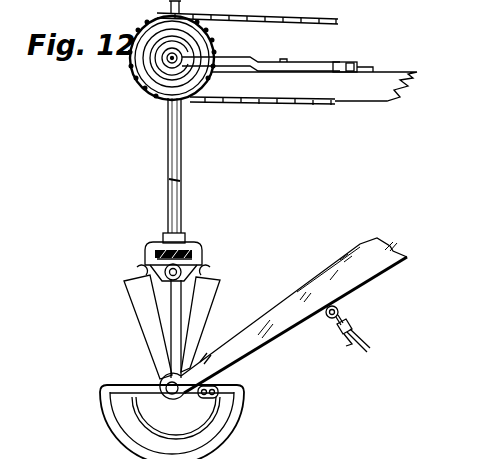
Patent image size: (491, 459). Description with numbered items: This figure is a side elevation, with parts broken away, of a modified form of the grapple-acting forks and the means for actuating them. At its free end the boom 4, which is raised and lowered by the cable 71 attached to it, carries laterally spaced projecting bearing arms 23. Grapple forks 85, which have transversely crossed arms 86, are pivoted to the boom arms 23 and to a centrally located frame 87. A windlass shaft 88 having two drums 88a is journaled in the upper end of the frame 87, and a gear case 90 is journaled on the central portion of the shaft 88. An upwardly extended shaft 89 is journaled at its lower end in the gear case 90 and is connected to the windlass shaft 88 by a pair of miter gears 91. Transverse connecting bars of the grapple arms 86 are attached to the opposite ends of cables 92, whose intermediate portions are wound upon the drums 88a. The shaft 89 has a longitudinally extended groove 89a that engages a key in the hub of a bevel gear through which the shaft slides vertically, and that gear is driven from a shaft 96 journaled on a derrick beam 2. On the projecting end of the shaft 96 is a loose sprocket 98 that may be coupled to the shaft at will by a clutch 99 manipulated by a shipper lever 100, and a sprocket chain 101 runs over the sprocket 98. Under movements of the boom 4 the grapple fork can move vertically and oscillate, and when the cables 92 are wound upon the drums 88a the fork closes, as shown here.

The derrick beam 2 is at (367, 98).
The boom 4 is at (368, 252).
The bearing arm 23 is at (250, 349).
The cable 71 is at (350, 332).
The grapple fork 85 is at (101, 412).
The grapple arm 86 is at (132, 296).
The frame 87 is at (172, 317).
The windlass shaft 88 is at (181, 280).
The windlass drum 88a is at (200, 262).
The shaft 89 is at (182, 157).
The groove 89a is at (172, 180).
The gear case 90 is at (196, 246).
The miter gears 91 is at (153, 257).
The cable 92 is at (135, 268).
The shaft 96 is at (172, 62).
The sprocket 98 is at (138, 84).
The clutch 99 is at (190, 43).
The shipper lever 100 is at (234, 59).
The sprocket chain 101 is at (315, 23).